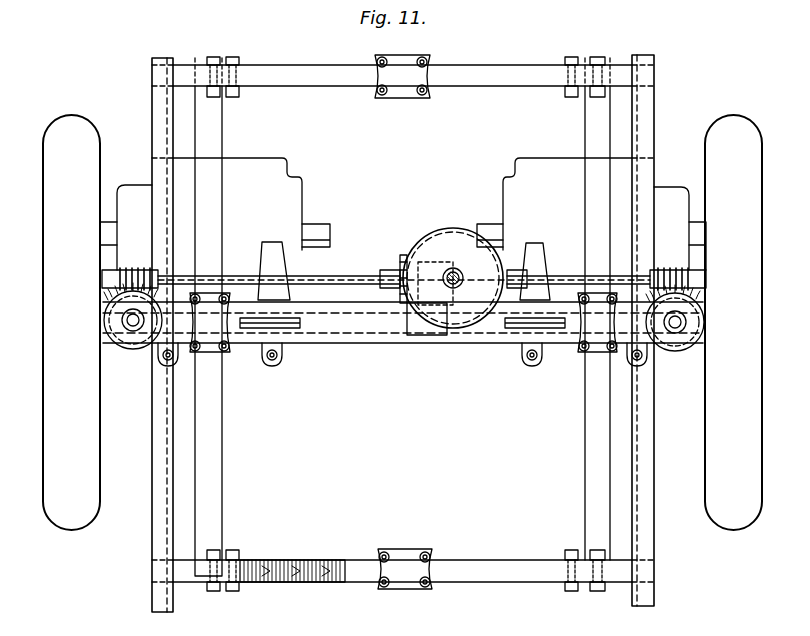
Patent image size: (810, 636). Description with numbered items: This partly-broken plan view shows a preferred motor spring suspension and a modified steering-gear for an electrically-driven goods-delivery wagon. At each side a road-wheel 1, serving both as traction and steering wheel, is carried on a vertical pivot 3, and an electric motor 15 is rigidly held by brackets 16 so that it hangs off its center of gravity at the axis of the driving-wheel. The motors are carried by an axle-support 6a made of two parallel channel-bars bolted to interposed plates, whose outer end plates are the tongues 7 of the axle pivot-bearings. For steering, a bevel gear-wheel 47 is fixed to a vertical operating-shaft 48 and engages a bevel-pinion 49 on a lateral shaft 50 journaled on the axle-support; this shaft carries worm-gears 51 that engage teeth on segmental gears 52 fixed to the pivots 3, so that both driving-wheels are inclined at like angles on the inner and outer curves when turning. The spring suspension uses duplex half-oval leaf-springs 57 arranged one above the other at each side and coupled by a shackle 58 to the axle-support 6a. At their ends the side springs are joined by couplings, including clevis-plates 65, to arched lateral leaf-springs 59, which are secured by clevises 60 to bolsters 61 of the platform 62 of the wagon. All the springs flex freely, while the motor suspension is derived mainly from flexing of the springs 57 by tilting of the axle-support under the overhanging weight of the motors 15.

The road-wheel 1 is at (43, 232).
The vertical pivot 3 is at (133, 326).
The axle-support 6a is at (392, 340).
The tongue 7 is at (268, 296).
The motor 15 is at (255, 160).
The brackets 16 is at (162, 362).
The bevel gear-wheel 47 is at (453, 281).
The vertical operating-shaft 48 is at (463, 278).
The bevel-pinion 49 is at (401, 262).
The lateral shaft 50 is at (345, 270).
The worm-gears 51 is at (146, 270).
The segmental gears 52 is at (104, 312).
The leaf-springs 57 is at (222, 437).
The shackle 58 is at (212, 350).
The arched leaf-springs 59 is at (334, 562).
The clevises 60 is at (408, 86).
The bolsters 61 is at (508, 86).
The platform 62 is at (155, 120).
The clevis-plates 65 is at (232, 62).